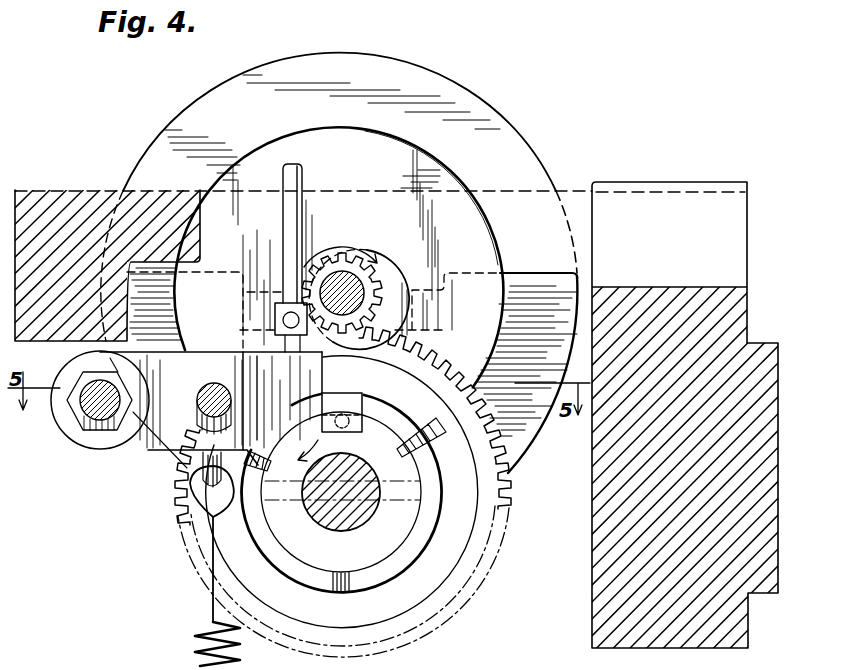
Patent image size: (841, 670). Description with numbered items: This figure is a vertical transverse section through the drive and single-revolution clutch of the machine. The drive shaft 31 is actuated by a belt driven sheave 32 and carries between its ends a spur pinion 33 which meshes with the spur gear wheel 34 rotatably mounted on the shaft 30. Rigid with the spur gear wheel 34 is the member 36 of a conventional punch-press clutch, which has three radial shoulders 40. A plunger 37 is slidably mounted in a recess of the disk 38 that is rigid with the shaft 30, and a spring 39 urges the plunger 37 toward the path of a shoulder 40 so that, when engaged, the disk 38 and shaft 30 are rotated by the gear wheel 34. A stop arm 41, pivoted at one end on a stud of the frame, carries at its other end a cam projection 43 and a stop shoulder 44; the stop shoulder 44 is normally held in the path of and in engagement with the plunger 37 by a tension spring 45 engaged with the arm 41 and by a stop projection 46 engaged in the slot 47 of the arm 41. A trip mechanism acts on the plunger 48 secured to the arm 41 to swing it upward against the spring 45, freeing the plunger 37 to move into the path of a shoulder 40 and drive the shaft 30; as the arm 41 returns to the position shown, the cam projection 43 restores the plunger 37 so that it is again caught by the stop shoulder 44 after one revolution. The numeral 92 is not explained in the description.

The shaft 30 is at (338, 531).
The drive shaft 31 is at (392, 264).
The belt driven sheave 32 is at (533, 160).
The spur pinion 33 is at (372, 283).
The spur gear wheel 34 is at (512, 480).
The clutch member 36 is at (403, 558).
The plunger 37 is at (342, 412).
The disk 38 is at (405, 527).
The spring 39 is at (348, 428).
The shoulder 40 is at (262, 466).
The stop arm 41 is at (211, 410).
The cam projection 43 is at (428, 437).
The stop shoulder 44 is at (317, 385).
The tension spring 45 is at (200, 626).
The stop projection 46 is at (216, 385).
The slot 47 is at (200, 427).
The plunger 48 is at (303, 172).
The pivot stud 92 is at (82, 420).